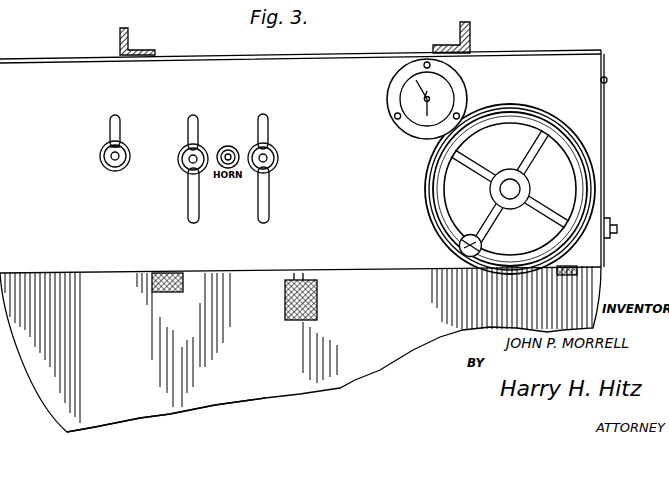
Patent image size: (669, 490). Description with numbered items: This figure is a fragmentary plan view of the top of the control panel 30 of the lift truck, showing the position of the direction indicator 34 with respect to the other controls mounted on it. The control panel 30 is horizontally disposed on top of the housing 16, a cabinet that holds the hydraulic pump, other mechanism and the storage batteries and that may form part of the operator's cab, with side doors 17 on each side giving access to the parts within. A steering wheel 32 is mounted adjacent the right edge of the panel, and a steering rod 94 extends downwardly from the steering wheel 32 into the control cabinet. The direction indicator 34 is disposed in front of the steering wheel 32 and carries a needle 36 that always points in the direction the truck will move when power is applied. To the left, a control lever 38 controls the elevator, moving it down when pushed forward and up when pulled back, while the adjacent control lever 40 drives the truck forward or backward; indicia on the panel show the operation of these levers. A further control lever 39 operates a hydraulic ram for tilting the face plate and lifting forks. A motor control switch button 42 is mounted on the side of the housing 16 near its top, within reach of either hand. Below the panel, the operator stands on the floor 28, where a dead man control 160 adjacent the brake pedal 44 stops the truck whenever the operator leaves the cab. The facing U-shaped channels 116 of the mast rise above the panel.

The U-shaped channels 116 is at (492, 30).
The side doors 17 is at (607, 135).
The control panel 30 is at (367, 258).
The housing 16 is at (245, 274).
The floor 28 is at (233, 401).
The dead man control 160 is at (156, 297).
The brake pedal 44 is at (318, 311).
The motor control switch button 42 is at (570, 277).
The control lever 39 is at (101, 160).
The control lever 40 is at (182, 162).
The control lever 38 is at (278, 160).
The steering wheel 32 is at (428, 197).
The steering rod 94 is at (512, 190).
The direction indicator 34 is at (399, 99).
The needle 36 is at (430, 98).